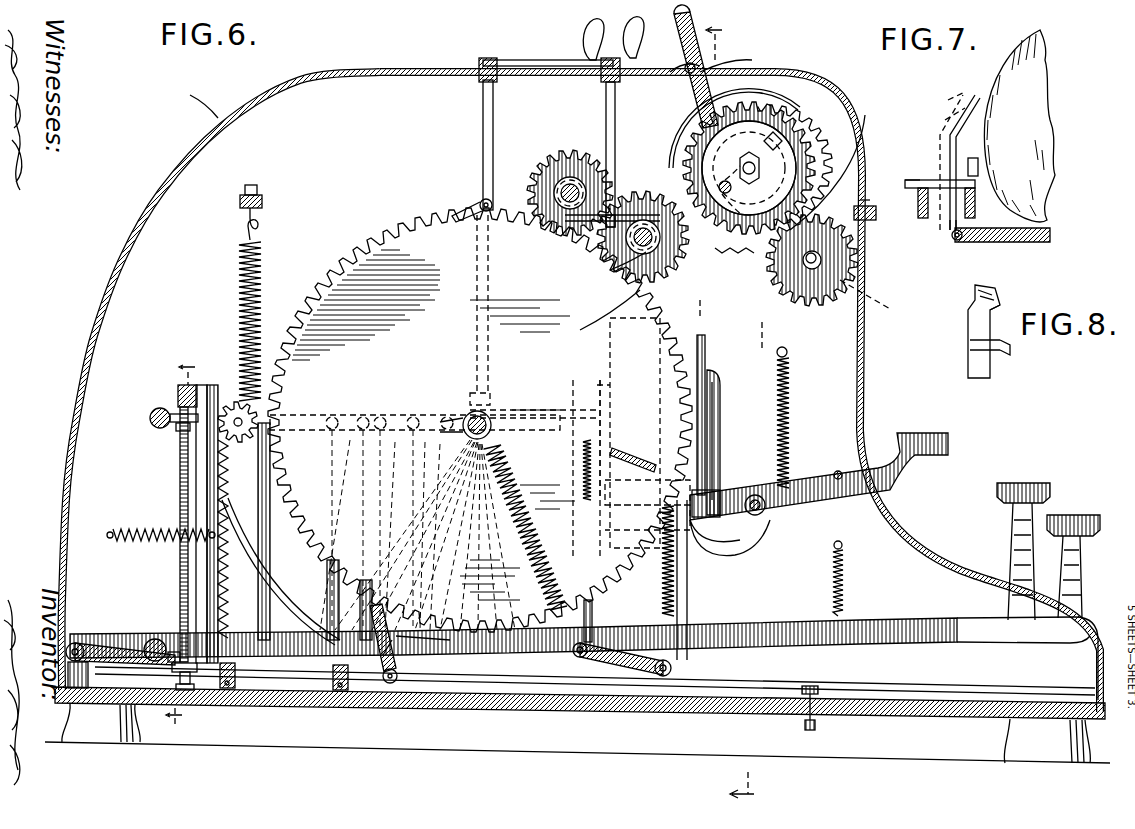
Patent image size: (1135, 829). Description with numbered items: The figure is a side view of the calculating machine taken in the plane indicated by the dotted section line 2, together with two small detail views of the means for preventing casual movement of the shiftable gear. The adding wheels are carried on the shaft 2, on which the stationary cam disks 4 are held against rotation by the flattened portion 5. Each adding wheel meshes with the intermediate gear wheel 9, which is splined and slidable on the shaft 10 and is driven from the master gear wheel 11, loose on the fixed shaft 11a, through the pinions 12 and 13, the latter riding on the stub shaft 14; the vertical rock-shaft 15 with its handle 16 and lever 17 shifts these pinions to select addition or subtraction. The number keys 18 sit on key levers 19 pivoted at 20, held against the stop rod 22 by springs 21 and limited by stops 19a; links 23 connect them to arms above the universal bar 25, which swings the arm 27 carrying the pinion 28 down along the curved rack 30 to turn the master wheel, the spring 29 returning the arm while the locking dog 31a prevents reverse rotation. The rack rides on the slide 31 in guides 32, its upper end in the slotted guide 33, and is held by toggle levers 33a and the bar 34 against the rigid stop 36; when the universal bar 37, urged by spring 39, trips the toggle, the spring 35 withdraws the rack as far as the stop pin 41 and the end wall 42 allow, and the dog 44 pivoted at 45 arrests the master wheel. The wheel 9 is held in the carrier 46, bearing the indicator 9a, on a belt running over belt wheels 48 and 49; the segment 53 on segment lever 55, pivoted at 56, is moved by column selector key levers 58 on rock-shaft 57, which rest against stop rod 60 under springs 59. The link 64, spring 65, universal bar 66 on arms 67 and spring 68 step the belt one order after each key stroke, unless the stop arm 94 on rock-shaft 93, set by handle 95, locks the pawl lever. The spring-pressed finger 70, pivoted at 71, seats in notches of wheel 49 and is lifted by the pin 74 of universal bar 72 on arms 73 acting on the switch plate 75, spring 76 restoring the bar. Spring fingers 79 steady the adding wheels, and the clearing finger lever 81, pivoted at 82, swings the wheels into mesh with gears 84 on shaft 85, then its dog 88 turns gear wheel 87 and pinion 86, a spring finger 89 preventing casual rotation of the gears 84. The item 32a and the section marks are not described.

In FIG. 6, the shaft 2 is at (720, 39).
In FIG. 6, the cam disk 4 is at (187, 363).
In FIG. 6, the flattened portion of shaft 5 is at (174, 726).
In FIG. 6, the intermediate gear wheel 9 is at (684, 175).
In FIG. 6, the indicator 9a is at (670, 150).
In FIG. 6, the shaft 10 is at (610, 270).
In FIG. 6, the master gear wheel 11 is at (370, 245).
In FIG. 6, the fixed shaft 11a is at (491, 425).
In FIG. 6, the pinion 12 is at (685, 265).
In FIG. 6, the pinion 13 is at (545, 165).
In FIG. 6, the stub shaft 14 is at (572, 184).
In FIG. 6, the vertical rock-shaft 15 is at (606, 112).
In FIG. 6, the handle 16 is at (630, 36).
In FIG. 6, the lever 17 is at (622, 215).
In FIG. 6, the number key 18 is at (1068, 515).
In FIG. 6, the key lever 19 is at (872, 622).
In FIG. 6, the stop 19a is at (812, 686).
In FIG. 6, the pivot 20 is at (66, 650).
In FIG. 6, the coiled spring 21 is at (845, 565).
In FIG. 6, the stop rod 22 is at (690, 610).
In FIG. 6, the link 23 is at (360, 605).
In FIG. 6, the universal bar 25 is at (430, 485).
In FIG. 6, the arm 27 is at (318, 415).
In FIG. 6, the pinion 28 is at (246, 442).
In FIG. 6, the spring 29 is at (260, 258).
In FIG. 6, the rack 30 is at (258, 535).
In FIG. 6, the slide 31 is at (290, 676).
In FIG. 6, the locking dog 31a is at (462, 214).
In FIG. 6, the guides / stationary bosses 32 is at (230, 688).
In FIG. 6, the knob 32a is at (152, 422).
In FIG. 6, the fixed slotted guide 33 is at (212, 385).
In FIG. 6, the toggle levers 33a is at (180, 431).
In FIG. 6, the bar 34 is at (180, 580).
In FIG. 6, the spring 35 is at (142, 533).
In FIG. 6, the rigid stop 36 is at (178, 388).
In FIG. 6, the universal bar 37 is at (172, 670).
In FIG. 6, the spring 39 is at (72, 688).
In FIG. 6, the stop pin 41 is at (388, 683).
In FIG. 6, the end wall of slot 42 is at (202, 385).
In FIG. 6, the dog 44 is at (405, 640).
In FIG. 6, the pivot 45 is at (395, 640).
In FIG. 6, the carrier 46 is at (601, 315).
In FIG. 6, the belt wheel 48 is at (610, 352).
In FIG. 7, the belt wheel 49 is at (1032, 110).
In FIG. 6, the segment 53 is at (706, 353).
In FIG. 6, the segment lever 55 is at (721, 410).
In FIG. 6, the pivot 56 is at (812, 480).
In FIG. 6, the rock-shaft 57 is at (762, 513).
In FIG. 7, the column selector key lever 58 is at (948, 222).
In FIG. 6, the spring 59 is at (790, 400).
In FIG. 6, the stop rod 60 is at (842, 462).
In FIG. 6, the link 64 is at (592, 612).
In FIG. 6, the spring 65 is at (584, 462).
In FIG. 6, the universal bar 66 is at (578, 660).
In FIG. 6, the pivoted arms 67 is at (625, 665).
In FIG. 6, the coiled spring 68 is at (520, 540).
In FIG. 7, the spring-pressed finger 70 is at (945, 140).
In FIG. 7, the pivot 71 is at (955, 240).
In FIG. 6, the universal bar 72 is at (650, 462).
In FIG. 7, the universal bar 72 is at (915, 180).
In FIG. 6, the arms 73 is at (728, 545).
In FIG. 7, the arms 73 is at (1000, 242).
In FIG. 6, the pin 74 is at (605, 500).
In FIG. 7, the switch plate 75 is at (978, 176).
In FIG. 6, the spring 76 is at (676, 583).
In FIG. 6, the spring finger 79 is at (838, 159).
In FIG. 6, the finger lever 81 is at (705, 26).
In FIG. 6, the pivot 82 is at (730, 194).
In FIG. 6, the gear wheel 84 is at (820, 300).
In FIG. 6, the shaft 85 is at (795, 280).
In FIG. 6, the pinion 86 is at (880, 302).
In FIG. 6, the gear wheel 87 is at (770, 255).
In FIG. 6, the dog 88 is at (724, 58).
In FIG. 6, the spring finger 89 is at (872, 206).
In FIG. 7, the spring finger 89 is at (899, 183).
In FIG. 6, the vertical rock-shaft 93 is at (483, 105).
In FIG. 6, the stop arm 94 is at (525, 405).
In FIG. 6, the actuating handle 95 is at (582, 36).